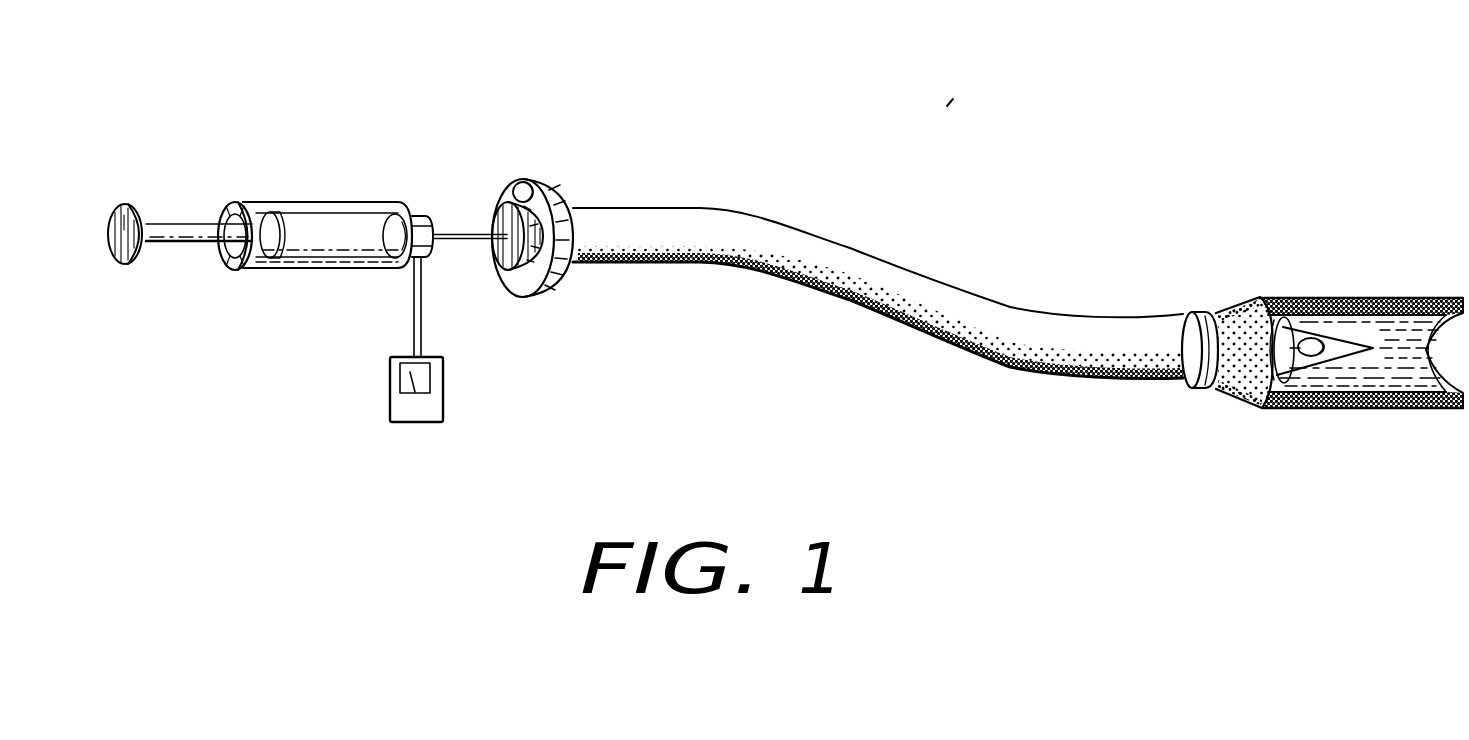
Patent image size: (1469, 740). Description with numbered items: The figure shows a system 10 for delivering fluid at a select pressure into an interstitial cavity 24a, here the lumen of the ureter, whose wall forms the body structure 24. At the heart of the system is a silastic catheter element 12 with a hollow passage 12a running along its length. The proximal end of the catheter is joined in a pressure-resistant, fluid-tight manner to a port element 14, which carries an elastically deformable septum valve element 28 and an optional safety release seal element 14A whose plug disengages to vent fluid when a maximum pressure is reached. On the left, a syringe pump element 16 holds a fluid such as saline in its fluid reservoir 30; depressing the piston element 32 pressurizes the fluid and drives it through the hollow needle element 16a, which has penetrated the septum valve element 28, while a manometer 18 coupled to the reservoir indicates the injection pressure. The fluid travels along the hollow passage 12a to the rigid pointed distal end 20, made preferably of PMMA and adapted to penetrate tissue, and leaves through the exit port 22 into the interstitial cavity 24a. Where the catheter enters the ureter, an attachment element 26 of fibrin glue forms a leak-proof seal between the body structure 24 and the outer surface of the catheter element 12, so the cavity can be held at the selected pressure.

The system 10 is at (948, 106).
The catheter element 12 is at (938, 279).
The hollow passage 12a is at (805, 261).
The port element 14 is at (560, 190).
The safety release seal element 14A is at (523, 182).
The pump element 16 is at (304, 201).
The needle element 16a is at (445, 233).
The manometer 18 is at (444, 400).
The pointed distal end 20 is at (1335, 347).
The exit port 22 is at (1306, 338).
The body structure 24 is at (1340, 408).
The interstitial cavity 24a is at (1408, 373).
The attachment element 26 is at (1190, 385).
The valve element 28 is at (500, 265).
The fluid reservoir 30 is at (292, 252).
The piston element 32 is at (167, 226).